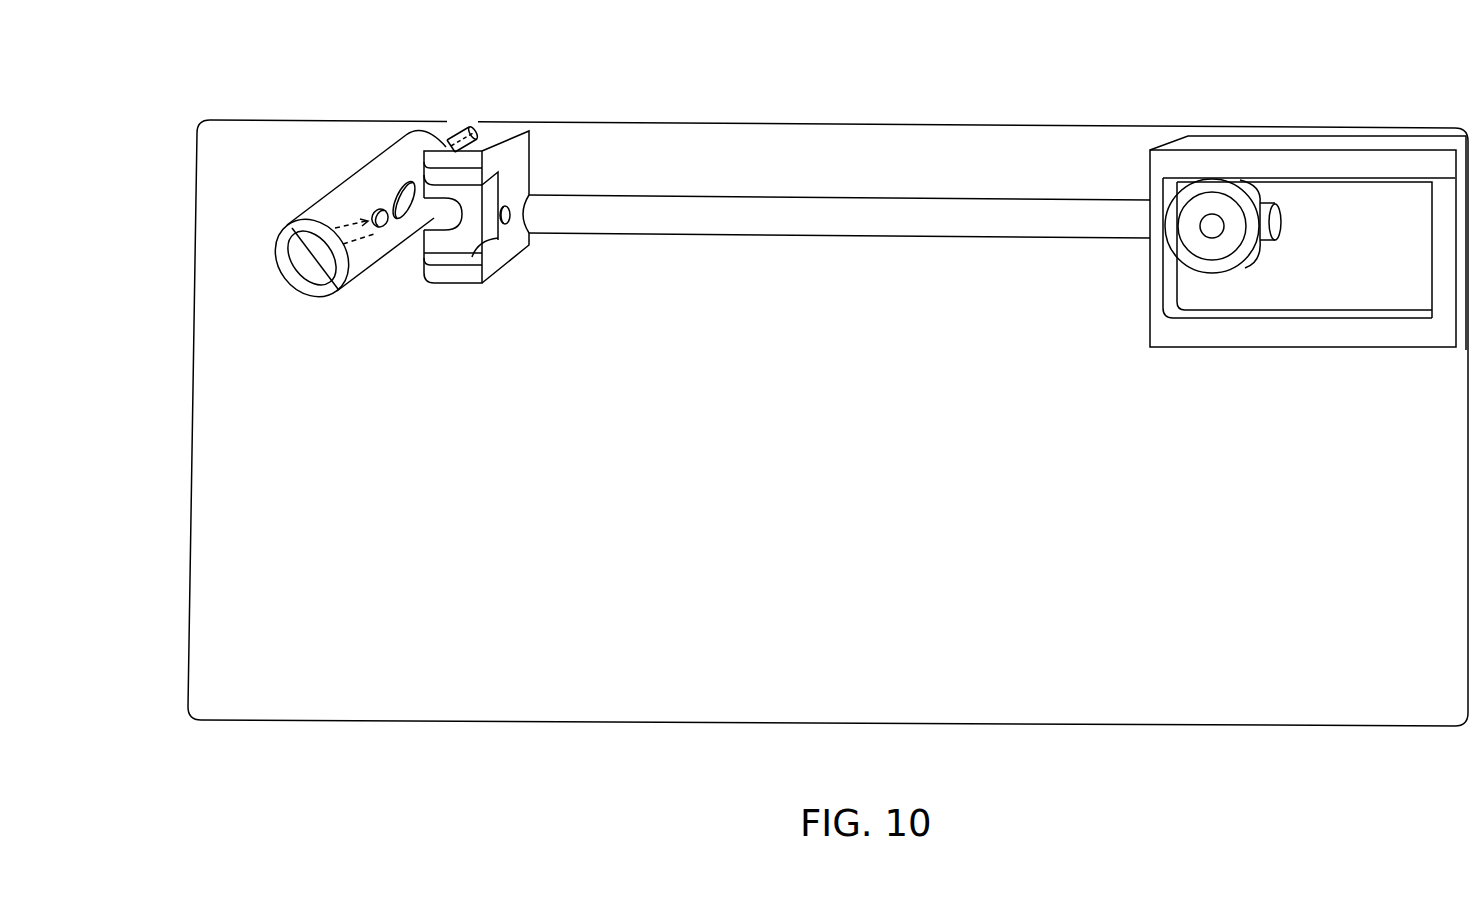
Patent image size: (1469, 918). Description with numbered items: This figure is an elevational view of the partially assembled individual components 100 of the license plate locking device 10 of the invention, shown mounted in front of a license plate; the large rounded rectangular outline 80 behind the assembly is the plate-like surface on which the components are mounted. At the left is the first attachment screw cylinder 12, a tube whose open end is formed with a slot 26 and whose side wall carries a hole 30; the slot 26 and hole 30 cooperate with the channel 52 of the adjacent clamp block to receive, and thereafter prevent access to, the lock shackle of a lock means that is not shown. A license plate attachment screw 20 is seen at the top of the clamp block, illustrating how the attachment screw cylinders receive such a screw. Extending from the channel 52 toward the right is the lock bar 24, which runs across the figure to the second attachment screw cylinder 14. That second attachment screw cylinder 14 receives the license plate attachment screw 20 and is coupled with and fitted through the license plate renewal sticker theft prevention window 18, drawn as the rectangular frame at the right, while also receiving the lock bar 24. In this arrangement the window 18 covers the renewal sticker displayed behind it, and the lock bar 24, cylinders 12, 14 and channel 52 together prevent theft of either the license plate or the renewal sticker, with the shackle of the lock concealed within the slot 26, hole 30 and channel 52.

The license plate locking device 10 is at (680, 359).
The first attachment screw cylinder 12 is at (337, 182).
The second attachment screw cylinder 14 is at (1178, 200).
The license plate renewal sticker theft prevention window 18 is at (1203, 157).
The license plate attachment screw 20 is at (457, 127).
The lock bar 24 is at (923, 197).
The slot 26 is at (293, 276).
The hole 30 is at (378, 228).
The channel 52 is at (503, 240).
The mounting plate 80 is at (966, 726).
The partially assembled individual components 100 is at (878, 292).